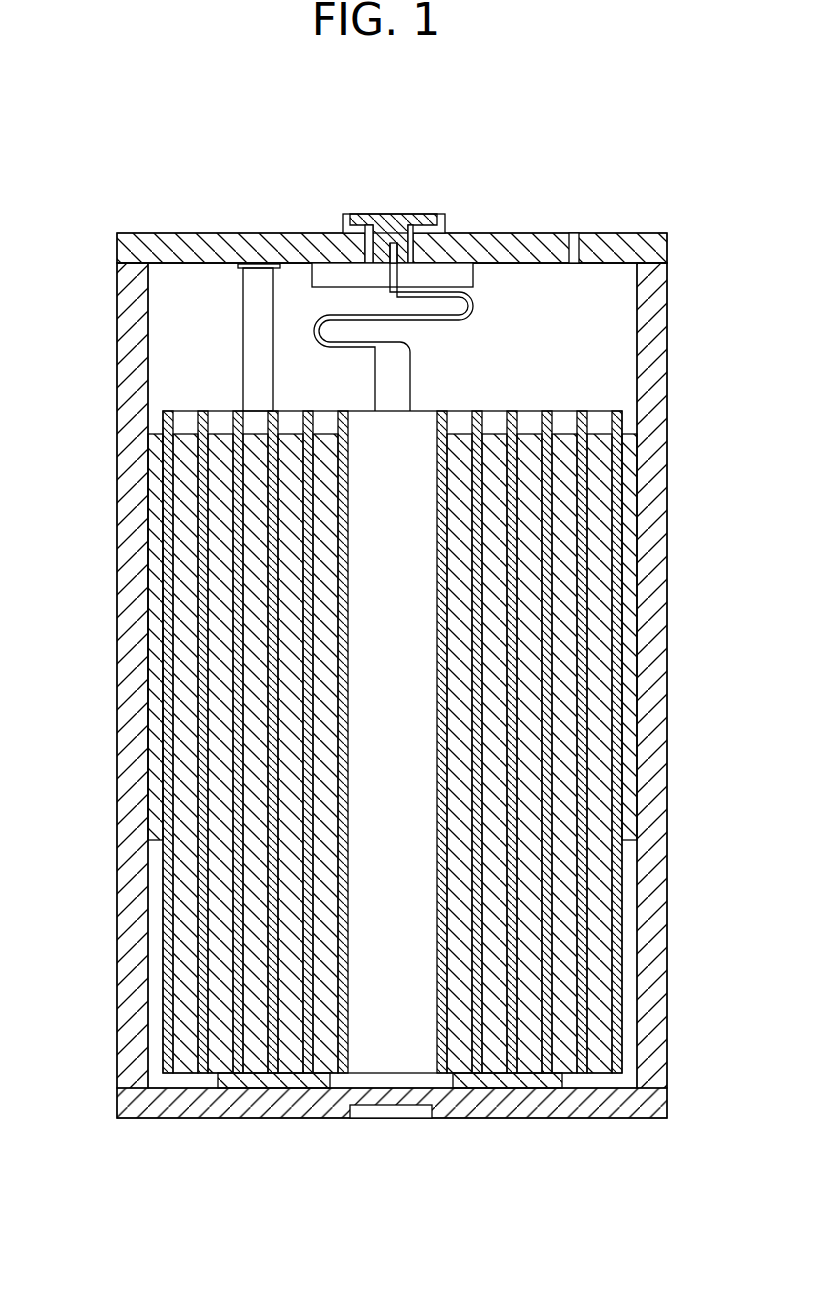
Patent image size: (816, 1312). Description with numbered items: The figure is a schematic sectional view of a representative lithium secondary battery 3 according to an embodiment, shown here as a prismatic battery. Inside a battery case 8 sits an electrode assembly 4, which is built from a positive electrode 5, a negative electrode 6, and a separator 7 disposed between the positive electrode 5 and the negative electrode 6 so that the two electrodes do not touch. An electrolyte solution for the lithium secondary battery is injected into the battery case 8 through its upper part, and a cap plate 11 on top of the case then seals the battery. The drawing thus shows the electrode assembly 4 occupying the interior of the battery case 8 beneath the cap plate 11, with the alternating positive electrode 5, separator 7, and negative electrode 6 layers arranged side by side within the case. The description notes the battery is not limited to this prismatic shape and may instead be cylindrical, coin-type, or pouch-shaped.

The lithium secondary battery 3 is at (400, 647).
The electrode assembly 4 is at (378, 708).
The positive electrode 5 is at (598, 933).
The negative electrode 6 is at (225, 896).
The separator 7 is at (200, 988).
The battery case 8 is at (137, 332).
The cap plate 11 is at (525, 247).